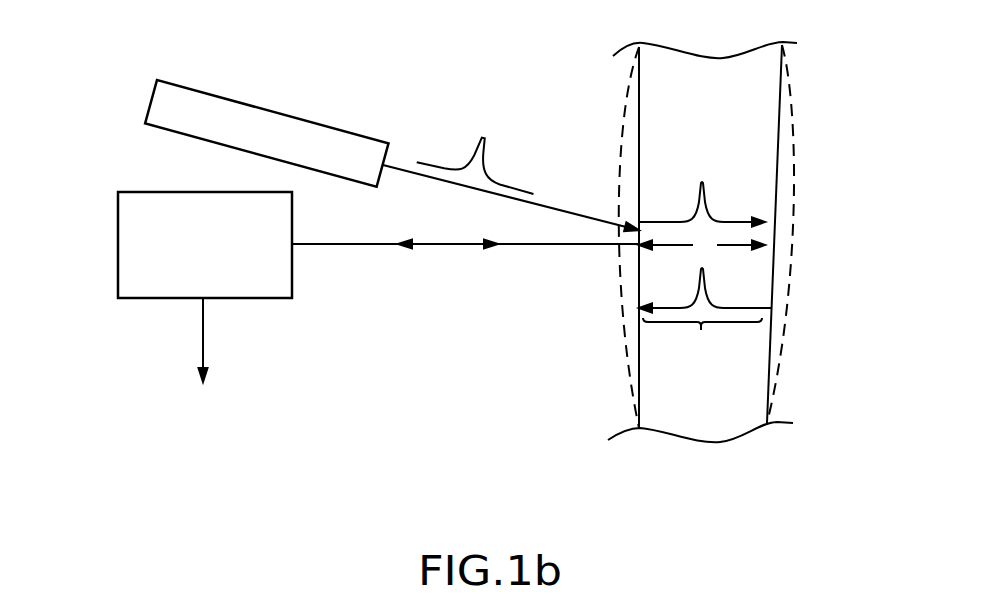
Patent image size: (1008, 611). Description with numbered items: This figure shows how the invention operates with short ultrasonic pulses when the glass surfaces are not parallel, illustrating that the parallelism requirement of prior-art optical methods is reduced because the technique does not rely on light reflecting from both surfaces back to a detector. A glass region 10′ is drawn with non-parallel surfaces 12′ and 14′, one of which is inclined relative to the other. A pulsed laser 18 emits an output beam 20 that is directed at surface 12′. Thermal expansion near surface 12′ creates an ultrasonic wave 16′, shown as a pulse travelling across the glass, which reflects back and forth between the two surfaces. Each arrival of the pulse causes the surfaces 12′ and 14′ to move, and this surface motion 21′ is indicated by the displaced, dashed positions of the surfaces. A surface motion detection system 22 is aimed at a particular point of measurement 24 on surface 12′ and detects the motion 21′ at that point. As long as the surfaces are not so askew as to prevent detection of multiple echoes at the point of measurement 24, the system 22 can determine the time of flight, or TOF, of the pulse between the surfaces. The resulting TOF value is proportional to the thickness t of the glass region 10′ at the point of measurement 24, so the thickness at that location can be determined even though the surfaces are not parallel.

The glass region 10′ is at (743, 375).
The surface 12′ is at (685, 67).
The surface 14′ is at (768, 140).
The ultrasonic wave 16′ is at (701, 332).
The pulsed laser 18 is at (277, 112).
The output beam 20 is at (572, 212).
The surface motion 21′ is at (805, 150).
The surface motion detection system 22 is at (118, 248).
The point of measurement 24 is at (633, 255).